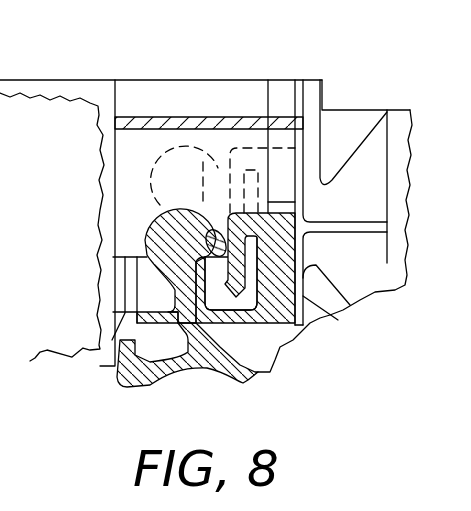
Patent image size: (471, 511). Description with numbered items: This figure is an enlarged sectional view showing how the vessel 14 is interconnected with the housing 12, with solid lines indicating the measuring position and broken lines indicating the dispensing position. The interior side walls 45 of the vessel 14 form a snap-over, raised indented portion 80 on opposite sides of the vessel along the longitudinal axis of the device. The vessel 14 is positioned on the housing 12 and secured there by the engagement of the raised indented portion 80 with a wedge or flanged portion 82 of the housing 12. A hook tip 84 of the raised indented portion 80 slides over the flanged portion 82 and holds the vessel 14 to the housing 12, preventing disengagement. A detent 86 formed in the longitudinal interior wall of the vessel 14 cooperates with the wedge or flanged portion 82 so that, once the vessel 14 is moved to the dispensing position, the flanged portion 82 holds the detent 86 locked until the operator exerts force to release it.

The housing 12 is at (268, 117).
The vessel 14 is at (276, 305).
The interior side walls 45 is at (262, 282).
The raised indented portion 80 is at (162, 243).
The flanged portion 82 is at (226, 229).
The hook tip 84 is at (160, 215).
The detent 86 is at (245, 255).